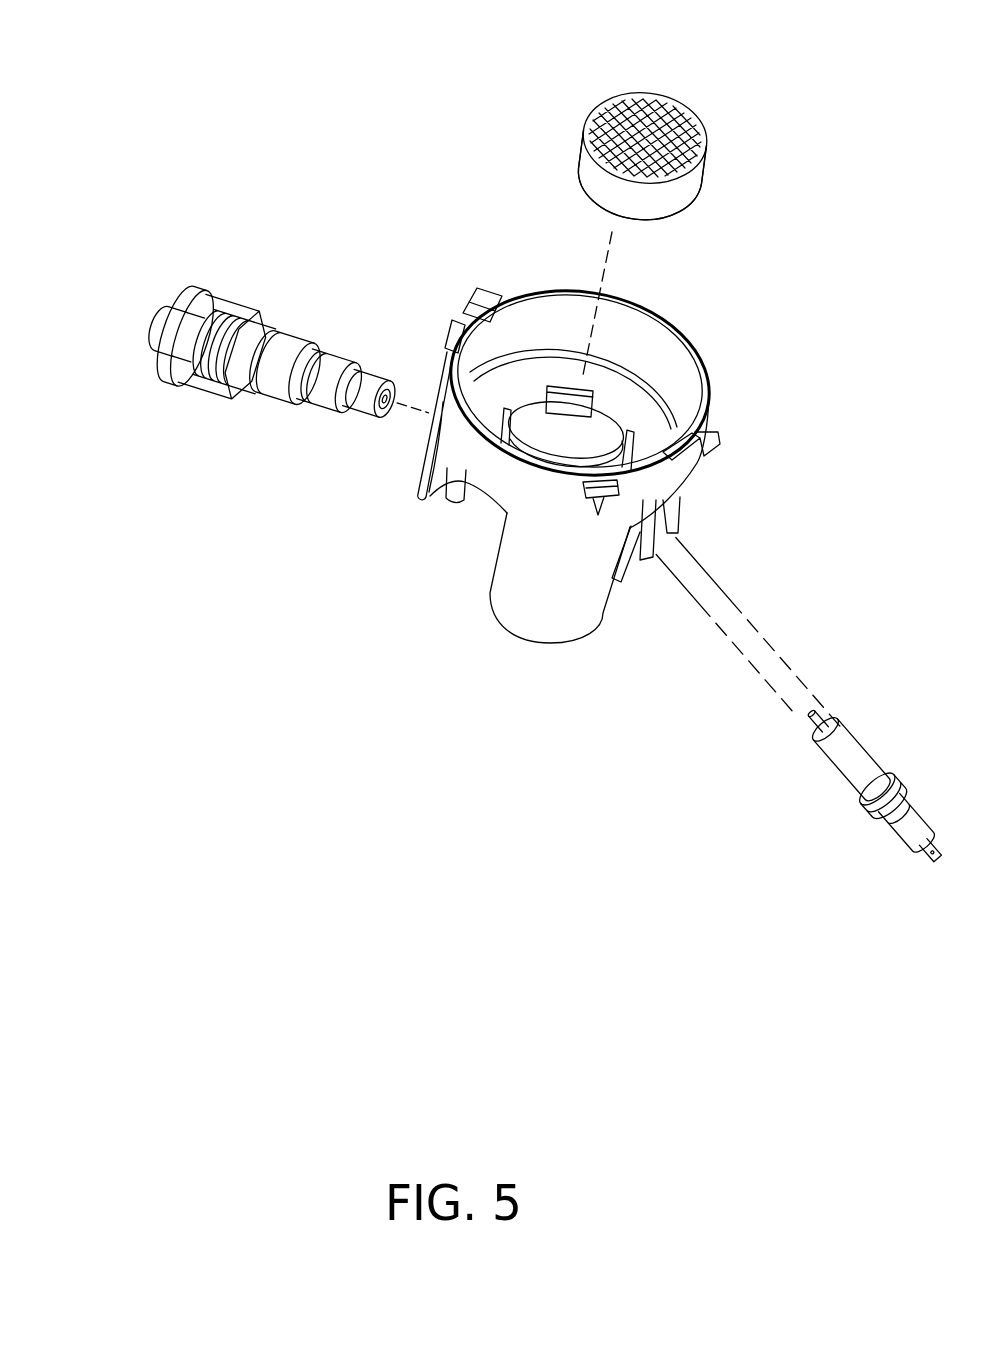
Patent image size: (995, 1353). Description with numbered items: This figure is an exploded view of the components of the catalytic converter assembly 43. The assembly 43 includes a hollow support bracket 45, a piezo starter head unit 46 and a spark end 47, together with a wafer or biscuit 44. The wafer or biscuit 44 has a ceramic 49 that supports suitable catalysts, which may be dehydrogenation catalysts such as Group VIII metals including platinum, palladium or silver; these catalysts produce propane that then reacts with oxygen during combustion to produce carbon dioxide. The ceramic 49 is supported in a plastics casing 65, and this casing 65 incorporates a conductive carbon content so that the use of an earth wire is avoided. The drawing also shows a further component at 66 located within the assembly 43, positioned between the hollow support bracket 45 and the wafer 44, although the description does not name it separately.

The catalytic converter assembly 43 is at (417, 545).
The wafer or biscuit 44 is at (693, 105).
The hollow support bracket 45 is at (503, 633).
The piezo starter head unit 46 is at (147, 317).
The spark end 47 is at (918, 858).
The ceramic 49 is at (703, 137).
The plastics casing 65 is at (672, 197).
The inner seat of housing 66 is at (573, 453).